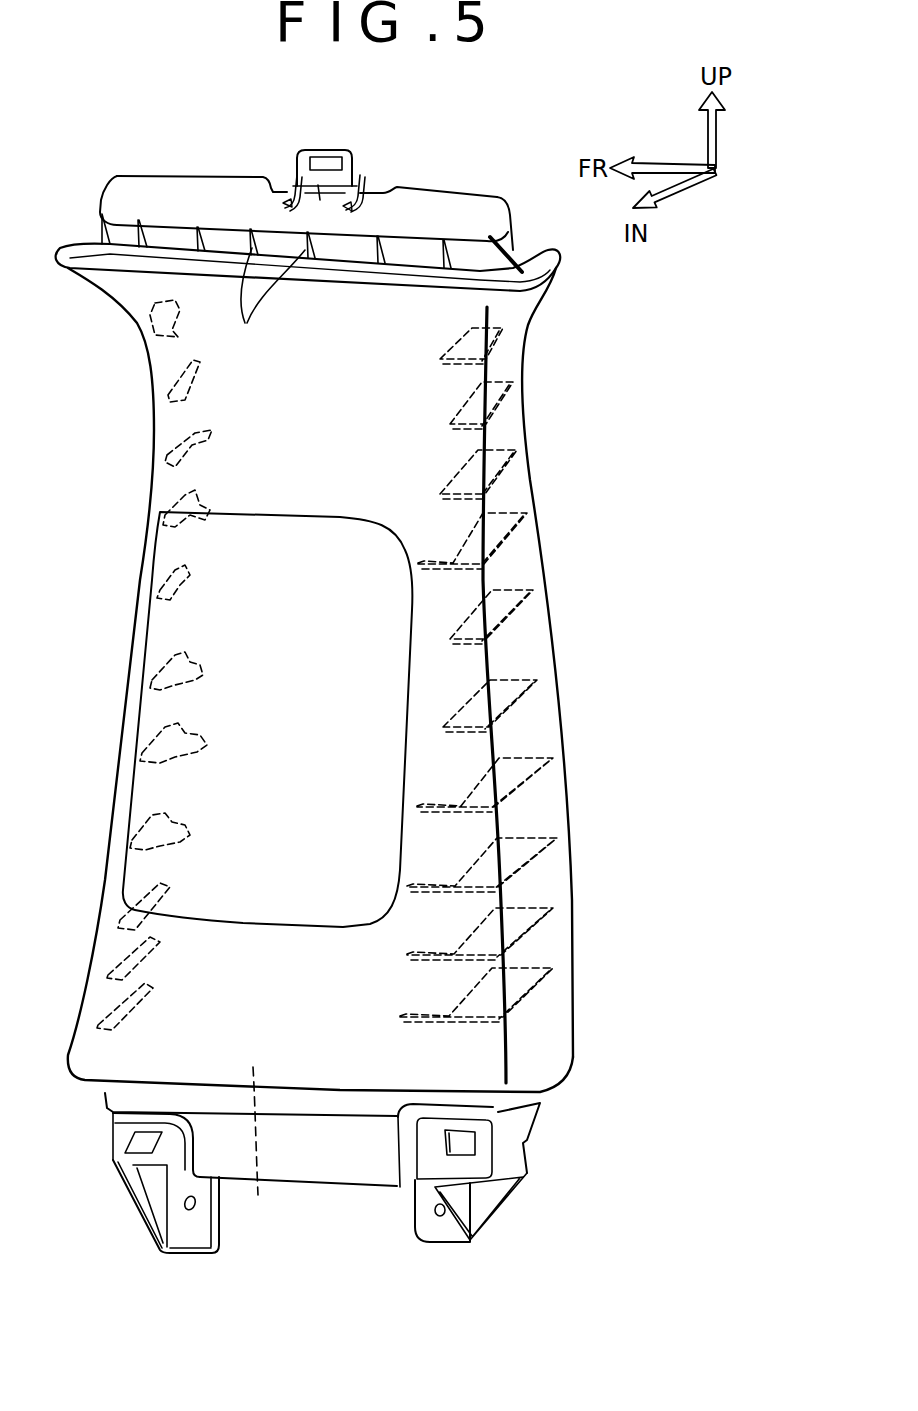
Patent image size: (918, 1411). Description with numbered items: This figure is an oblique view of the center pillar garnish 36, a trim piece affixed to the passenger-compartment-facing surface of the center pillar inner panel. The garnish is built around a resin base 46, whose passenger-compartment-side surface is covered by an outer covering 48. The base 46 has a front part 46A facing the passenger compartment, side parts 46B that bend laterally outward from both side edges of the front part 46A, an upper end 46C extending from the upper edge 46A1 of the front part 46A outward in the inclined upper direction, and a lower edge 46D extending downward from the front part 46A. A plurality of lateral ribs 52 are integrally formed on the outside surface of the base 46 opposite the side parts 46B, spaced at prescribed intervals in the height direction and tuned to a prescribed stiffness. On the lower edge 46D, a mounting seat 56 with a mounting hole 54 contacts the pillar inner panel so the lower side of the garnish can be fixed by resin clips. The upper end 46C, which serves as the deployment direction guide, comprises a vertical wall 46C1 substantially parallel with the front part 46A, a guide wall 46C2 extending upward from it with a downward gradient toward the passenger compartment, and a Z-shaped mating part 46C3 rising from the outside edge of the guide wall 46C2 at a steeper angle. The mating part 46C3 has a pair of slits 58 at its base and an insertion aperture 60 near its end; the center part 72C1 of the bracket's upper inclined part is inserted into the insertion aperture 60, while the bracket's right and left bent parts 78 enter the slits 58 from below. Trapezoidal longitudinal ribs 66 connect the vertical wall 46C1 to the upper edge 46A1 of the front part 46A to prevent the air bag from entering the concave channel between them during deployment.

The center pillar garnish 36 is at (573, 563).
The base 46 is at (311, 1185).
The front part 46A is at (258, 1148).
The upper edge 46A1 is at (405, 280).
The side parts 46B is at (545, 730).
The upper end 46C is at (180, 173).
The vertical wall 46C1 is at (342, 253).
The guide wall 46C2 is at (455, 203).
The mating part 46C3 is at (310, 145).
The lower edge 46D is at (345, 1165).
The outer covering 48 is at (540, 640).
The lateral ribs 52 is at (150, 740).
The mounting hole 54 is at (187, 1212).
The mounting seat 56 is at (200, 1240).
The slits 58 is at (290, 200).
The insertion aperture 60 is at (333, 167).
The longitudinal ribs 66 is at (263, 305).
The center part 72C1 is at (332, 157).
The bent parts 78 is at (295, 185).